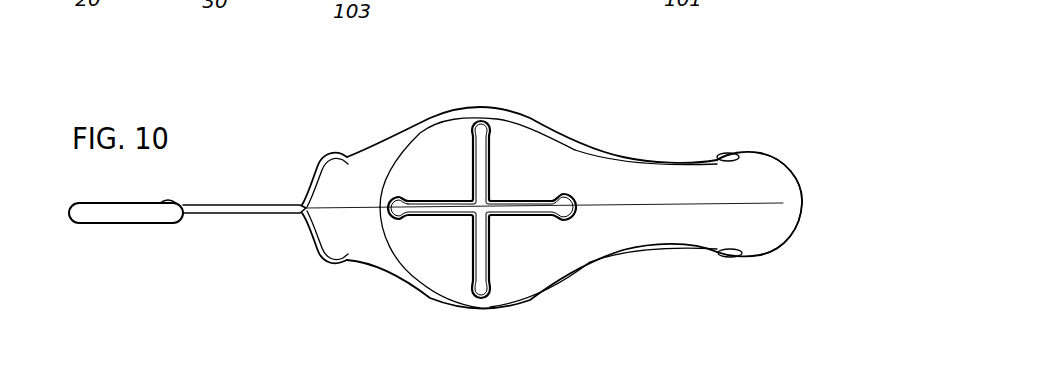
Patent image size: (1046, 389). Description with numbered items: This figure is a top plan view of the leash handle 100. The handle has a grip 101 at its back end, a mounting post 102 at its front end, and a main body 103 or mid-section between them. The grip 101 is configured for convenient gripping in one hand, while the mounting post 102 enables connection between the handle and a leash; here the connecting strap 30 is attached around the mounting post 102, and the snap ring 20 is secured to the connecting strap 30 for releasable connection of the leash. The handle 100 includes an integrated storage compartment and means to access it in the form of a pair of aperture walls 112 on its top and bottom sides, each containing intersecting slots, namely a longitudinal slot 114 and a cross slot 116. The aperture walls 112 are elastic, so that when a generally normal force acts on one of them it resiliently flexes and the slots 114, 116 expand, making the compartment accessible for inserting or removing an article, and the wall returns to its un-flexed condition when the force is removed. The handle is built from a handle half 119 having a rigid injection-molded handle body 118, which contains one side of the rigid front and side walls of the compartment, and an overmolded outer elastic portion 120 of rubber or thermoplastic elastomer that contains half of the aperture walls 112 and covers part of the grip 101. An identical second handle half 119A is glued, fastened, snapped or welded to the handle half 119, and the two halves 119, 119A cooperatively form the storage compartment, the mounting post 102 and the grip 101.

The snap ring 20 is at (113, 228).
The connecting strap 30 is at (226, 200).
The leash handle 100 is at (630, 132).
The grip 101 is at (727, 256).
The mounting post 102 is at (324, 194).
The main body 103 is at (390, 260).
The aperture wall 112 is at (507, 176).
The longitudinal slot 114 is at (527, 213).
The cross slot 116 is at (477, 253).
The handle body 118 is at (434, 115).
The handle half 119 is at (772, 233).
The second handle half 119A is at (760, 178).
The outer elastic portion 120 is at (635, 187).